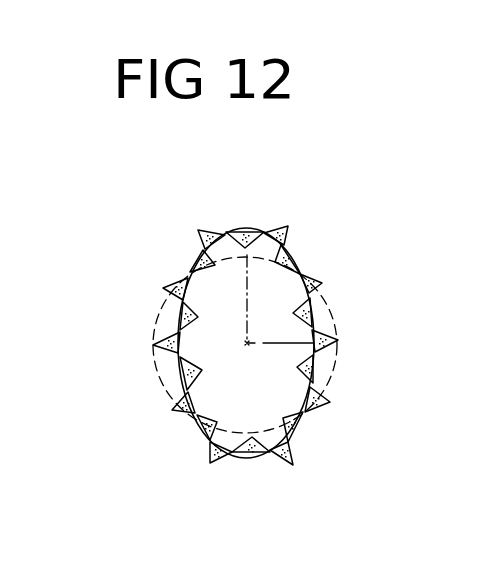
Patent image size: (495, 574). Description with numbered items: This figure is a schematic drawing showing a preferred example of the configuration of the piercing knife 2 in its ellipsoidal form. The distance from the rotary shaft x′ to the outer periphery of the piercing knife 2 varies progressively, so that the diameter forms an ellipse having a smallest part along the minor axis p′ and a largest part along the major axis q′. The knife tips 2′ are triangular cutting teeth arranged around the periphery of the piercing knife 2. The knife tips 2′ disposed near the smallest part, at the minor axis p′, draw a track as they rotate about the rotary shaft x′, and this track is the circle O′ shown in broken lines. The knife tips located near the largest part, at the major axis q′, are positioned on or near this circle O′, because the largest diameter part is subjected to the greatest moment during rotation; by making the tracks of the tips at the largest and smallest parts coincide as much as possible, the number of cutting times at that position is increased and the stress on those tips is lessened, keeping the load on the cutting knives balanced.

The piercing knife 2 is at (194, 254).
The knife tip 2′ is at (253, 243).
The circle O′ is at (325, 292).
The major axis q′ is at (234, 273).
The rotary shaft x′ is at (247, 329).
The minor axis p′ is at (289, 345).